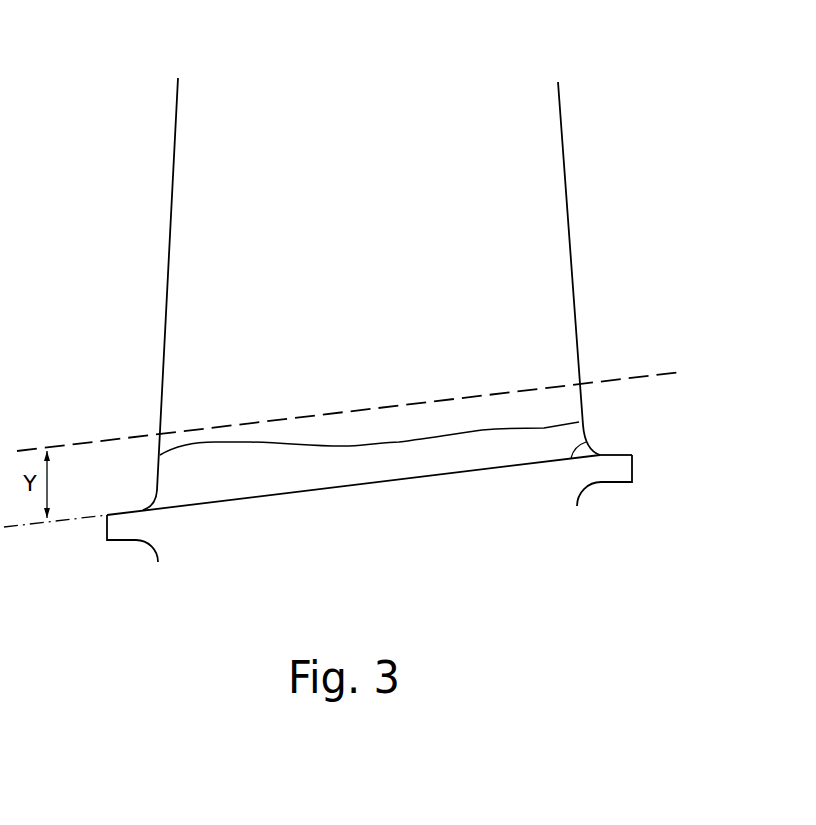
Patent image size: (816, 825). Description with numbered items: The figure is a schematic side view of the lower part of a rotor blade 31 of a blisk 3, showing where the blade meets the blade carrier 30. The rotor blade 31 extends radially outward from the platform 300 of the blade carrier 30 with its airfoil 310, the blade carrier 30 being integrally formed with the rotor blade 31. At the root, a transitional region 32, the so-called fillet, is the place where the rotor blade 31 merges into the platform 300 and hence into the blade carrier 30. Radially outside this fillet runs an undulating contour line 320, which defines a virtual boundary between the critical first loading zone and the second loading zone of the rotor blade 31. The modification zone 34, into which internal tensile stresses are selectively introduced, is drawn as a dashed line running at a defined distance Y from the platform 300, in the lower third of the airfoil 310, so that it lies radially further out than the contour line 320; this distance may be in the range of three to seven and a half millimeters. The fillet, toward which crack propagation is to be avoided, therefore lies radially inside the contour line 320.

The blisk 3 is at (377, 272).
The blade carrier 30 is at (399, 485).
The platform 300 is at (592, 440).
The rotor blade 31 is at (578, 163).
The airfoil 310 is at (403, 127).
The transitional region 32 is at (369, 436).
The contour line 320 is at (482, 430).
The modification zone 34 is at (197, 430).